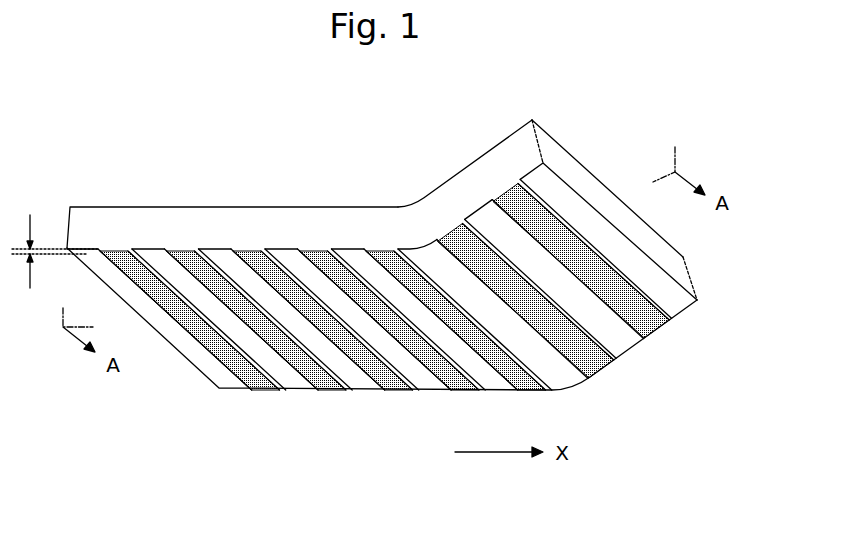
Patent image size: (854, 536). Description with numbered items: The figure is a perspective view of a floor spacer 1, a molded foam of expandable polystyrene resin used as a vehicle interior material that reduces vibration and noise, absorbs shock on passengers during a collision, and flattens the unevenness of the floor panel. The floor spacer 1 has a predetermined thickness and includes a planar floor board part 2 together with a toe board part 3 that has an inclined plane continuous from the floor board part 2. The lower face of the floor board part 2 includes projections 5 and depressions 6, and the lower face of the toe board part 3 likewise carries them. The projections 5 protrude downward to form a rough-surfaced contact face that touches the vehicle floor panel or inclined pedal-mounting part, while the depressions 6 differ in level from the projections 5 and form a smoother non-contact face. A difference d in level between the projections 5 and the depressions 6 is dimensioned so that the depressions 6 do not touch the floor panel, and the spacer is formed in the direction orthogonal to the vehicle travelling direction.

The floor spacer 1 is at (283, 98).
The floor board part 2 is at (221, 224).
The toe board part 3 is at (497, 159).
The projections 5 is at (253, 390).
The depressions 6 is at (297, 382).
The difference in level d is at (36, 248).